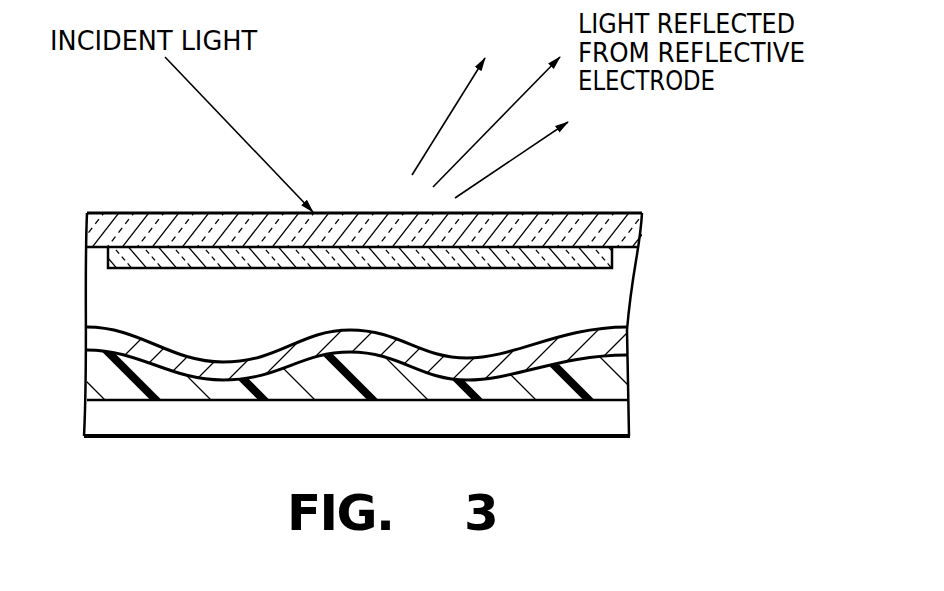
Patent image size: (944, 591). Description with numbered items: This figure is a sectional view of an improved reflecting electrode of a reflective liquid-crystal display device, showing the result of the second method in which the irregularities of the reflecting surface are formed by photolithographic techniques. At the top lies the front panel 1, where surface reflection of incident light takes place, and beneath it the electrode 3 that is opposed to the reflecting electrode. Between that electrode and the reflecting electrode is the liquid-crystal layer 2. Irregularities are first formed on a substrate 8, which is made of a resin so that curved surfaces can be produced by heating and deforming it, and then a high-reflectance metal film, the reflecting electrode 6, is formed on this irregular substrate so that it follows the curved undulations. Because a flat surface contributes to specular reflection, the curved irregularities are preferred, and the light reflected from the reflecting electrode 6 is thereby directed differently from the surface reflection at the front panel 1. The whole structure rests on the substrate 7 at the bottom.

The front panel 1 is at (632, 225).
The electrode opposed to the reflecting electrode 3 is at (620, 250).
The liquid-crystal layer 2 is at (620, 310).
The reflecting electrode 6 is at (617, 342).
The substrate 8 is at (627, 380).
The substrate 7 is at (625, 417).